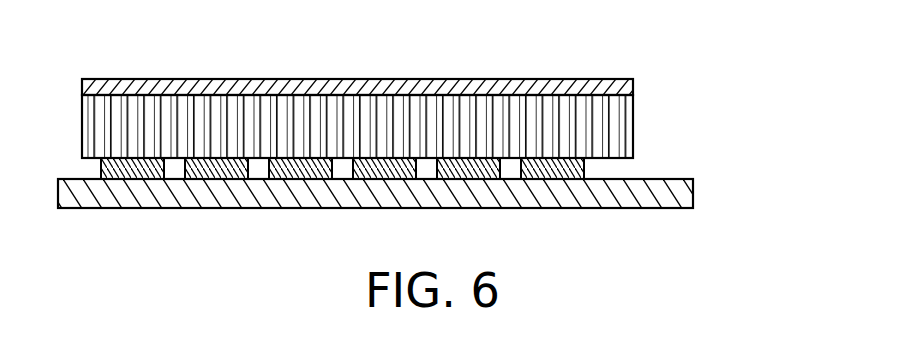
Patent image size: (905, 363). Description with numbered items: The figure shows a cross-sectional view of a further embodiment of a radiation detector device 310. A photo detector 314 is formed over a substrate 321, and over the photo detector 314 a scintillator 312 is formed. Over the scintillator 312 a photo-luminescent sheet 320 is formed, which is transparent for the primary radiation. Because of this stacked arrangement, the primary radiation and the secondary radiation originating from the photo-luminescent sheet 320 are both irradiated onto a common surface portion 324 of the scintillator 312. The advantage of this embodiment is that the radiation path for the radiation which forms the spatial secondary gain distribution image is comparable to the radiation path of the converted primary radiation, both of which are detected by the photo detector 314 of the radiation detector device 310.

The radiation detector device 310 is at (440, 117).
The scintillator 312 is at (623, 123).
The photo detector 314 is at (618, 170).
The photo-luminescent sheet 320 is at (392, 62).
The substrate 321 is at (685, 193).
The common surface portion 324 is at (540, 92).